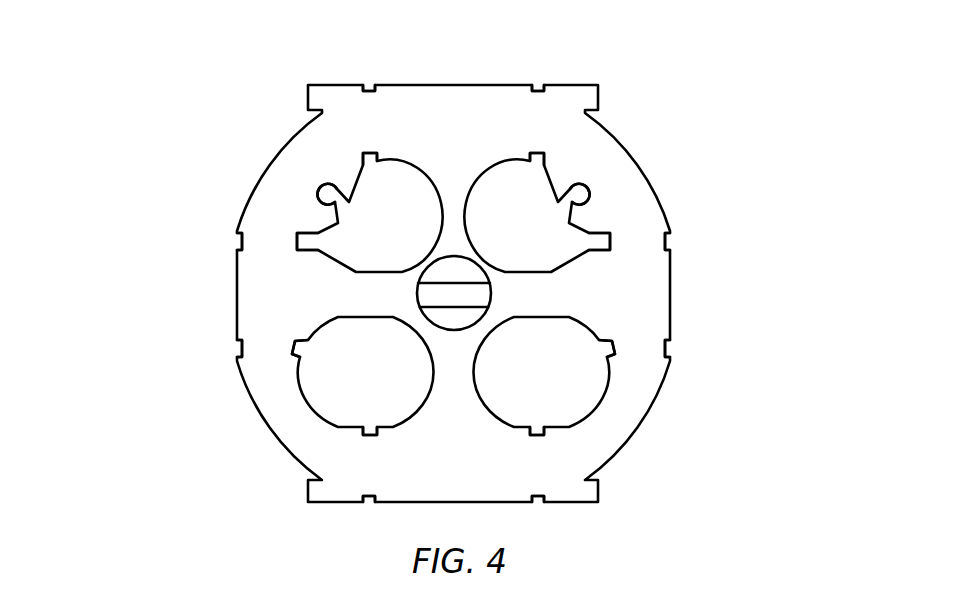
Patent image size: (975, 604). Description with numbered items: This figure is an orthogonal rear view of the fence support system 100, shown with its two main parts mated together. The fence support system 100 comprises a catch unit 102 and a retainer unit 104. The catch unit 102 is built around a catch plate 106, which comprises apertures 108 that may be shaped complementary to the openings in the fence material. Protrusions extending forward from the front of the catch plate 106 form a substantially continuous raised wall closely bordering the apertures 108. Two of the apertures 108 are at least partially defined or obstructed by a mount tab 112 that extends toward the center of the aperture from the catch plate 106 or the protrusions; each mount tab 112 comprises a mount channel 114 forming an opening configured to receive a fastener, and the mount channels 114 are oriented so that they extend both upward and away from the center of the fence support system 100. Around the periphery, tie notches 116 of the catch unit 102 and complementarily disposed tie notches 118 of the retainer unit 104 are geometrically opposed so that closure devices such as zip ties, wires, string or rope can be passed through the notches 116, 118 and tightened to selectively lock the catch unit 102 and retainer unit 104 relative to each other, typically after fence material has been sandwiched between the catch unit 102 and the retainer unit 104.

The fence support system 100 is at (513, 251).
The catch unit 102 is at (450, 105).
The retainer unit 104 is at (454, 293).
The catch plate 106 is at (618, 178).
The apertures 108 is at (356, 270).
The mount tab 112 is at (312, 228).
The mount channel 114 is at (323, 186).
The tie notches 116 is at (454, 290).
The tie notches 118 is at (603, 562).